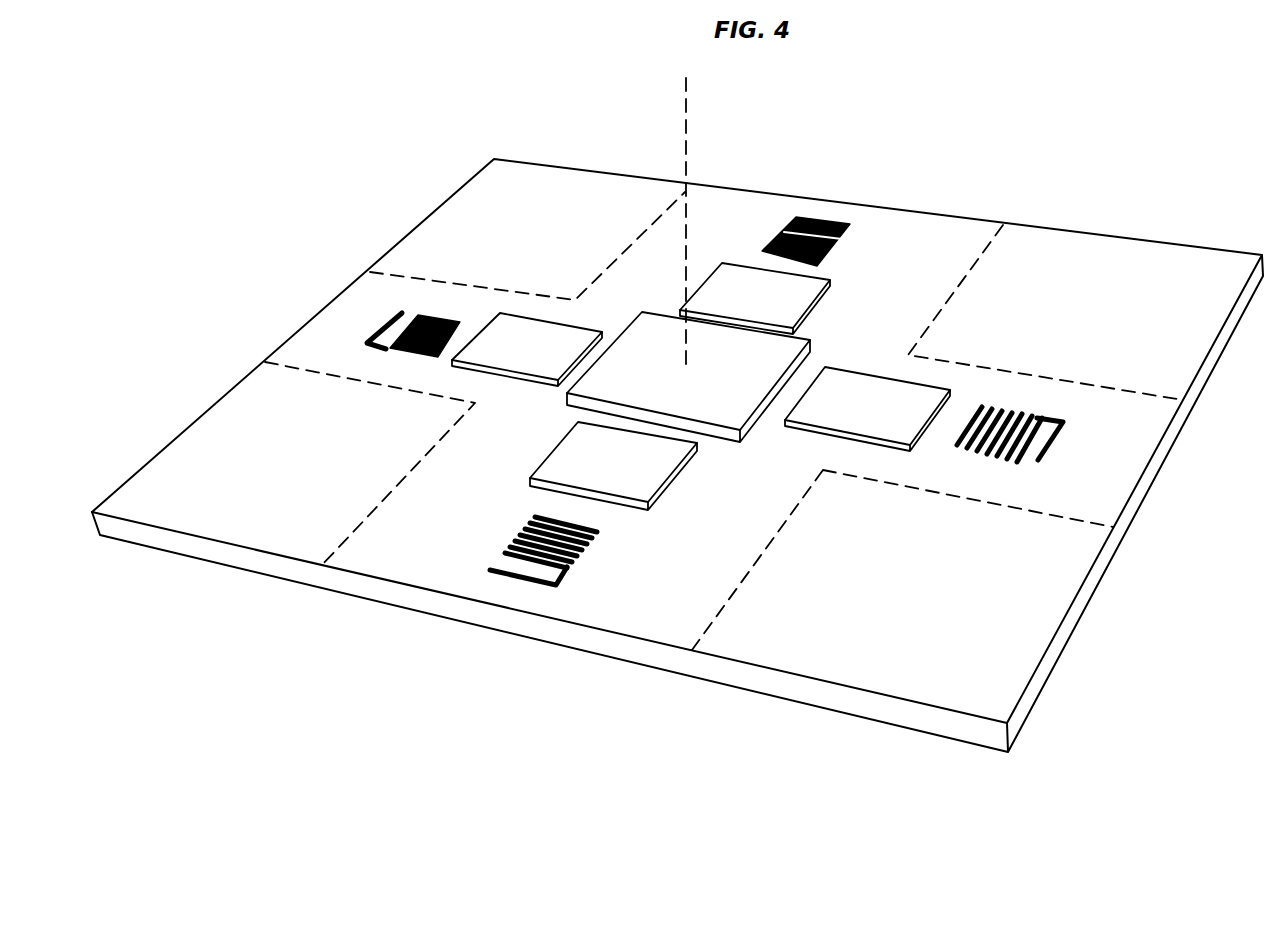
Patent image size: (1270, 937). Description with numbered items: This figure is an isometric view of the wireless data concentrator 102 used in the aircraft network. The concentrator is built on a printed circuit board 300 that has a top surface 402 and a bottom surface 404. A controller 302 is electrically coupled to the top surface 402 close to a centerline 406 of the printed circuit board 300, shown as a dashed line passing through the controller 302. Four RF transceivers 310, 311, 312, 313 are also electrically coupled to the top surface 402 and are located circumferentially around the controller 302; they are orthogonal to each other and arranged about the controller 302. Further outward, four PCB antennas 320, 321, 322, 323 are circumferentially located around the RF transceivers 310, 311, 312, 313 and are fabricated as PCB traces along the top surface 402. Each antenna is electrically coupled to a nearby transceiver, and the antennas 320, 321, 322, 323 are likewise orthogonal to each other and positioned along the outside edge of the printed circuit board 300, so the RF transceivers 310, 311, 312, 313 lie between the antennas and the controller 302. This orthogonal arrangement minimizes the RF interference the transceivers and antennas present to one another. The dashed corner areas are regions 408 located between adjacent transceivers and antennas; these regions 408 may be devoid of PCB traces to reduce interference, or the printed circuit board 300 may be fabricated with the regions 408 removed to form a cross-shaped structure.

The wireless data concentrator 102 is at (356, 120).
The printed circuit board 300 is at (979, 219).
The controller 302 is at (688, 377).
The RF transceiver 310 is at (755, 298).
The RF transceiver 311 is at (867, 409).
The RF transceiver 312 is at (613, 466).
The RF transceiver 313 is at (527, 349).
The PCB antenna 320 is at (838, 224).
The PCB antenna 321 is at (1054, 418).
The PCB antenna 322 is at (563, 577).
The PCB antenna 323 is at (375, 332).
The top surface 402 is at (427, 570).
The bottom surface 404 is at (437, 619).
The centerline 406 is at (688, 97).
The regions 408 is at (456, 223).